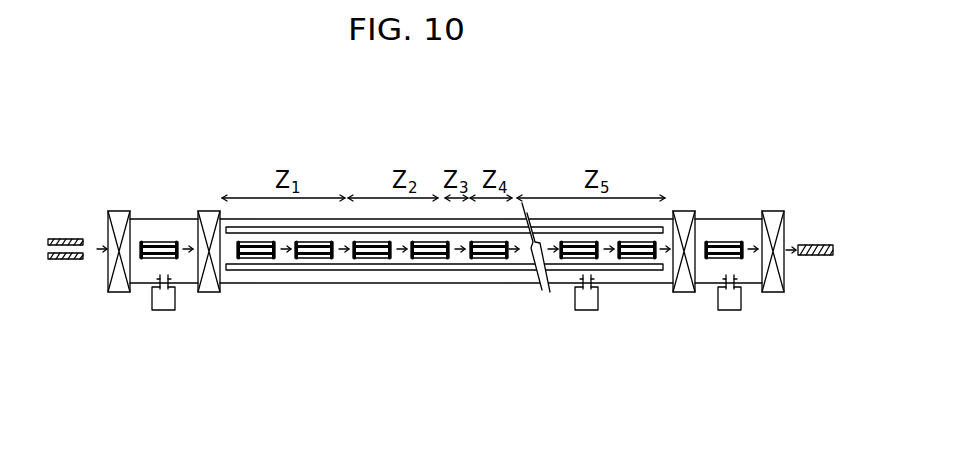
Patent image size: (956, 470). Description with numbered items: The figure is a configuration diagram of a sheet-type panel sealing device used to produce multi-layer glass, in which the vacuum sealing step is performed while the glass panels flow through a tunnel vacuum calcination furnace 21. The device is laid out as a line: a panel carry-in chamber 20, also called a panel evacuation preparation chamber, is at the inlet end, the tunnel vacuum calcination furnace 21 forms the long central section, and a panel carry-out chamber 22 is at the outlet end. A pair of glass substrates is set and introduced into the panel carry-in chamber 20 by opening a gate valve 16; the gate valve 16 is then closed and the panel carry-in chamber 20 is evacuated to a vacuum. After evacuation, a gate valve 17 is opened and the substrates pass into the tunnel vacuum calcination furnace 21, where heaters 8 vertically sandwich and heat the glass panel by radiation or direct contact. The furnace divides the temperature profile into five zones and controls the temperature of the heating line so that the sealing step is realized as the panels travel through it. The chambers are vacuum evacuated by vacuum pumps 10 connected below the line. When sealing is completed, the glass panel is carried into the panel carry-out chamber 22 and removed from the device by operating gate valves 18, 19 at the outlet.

The heaters 8 is at (392, 230).
The vacuum pump 10 is at (176, 307).
The gate valve 16 is at (118, 211).
The gate valve 17 is at (207, 211).
The gate valve 18 is at (683, 211).
The gate valve 19 is at (773, 211).
The panel carry-in chamber 20 is at (150, 282).
The tunnel vacuum calcination furnace 21 is at (327, 283).
The panel carry-out chamber 22 is at (710, 282).